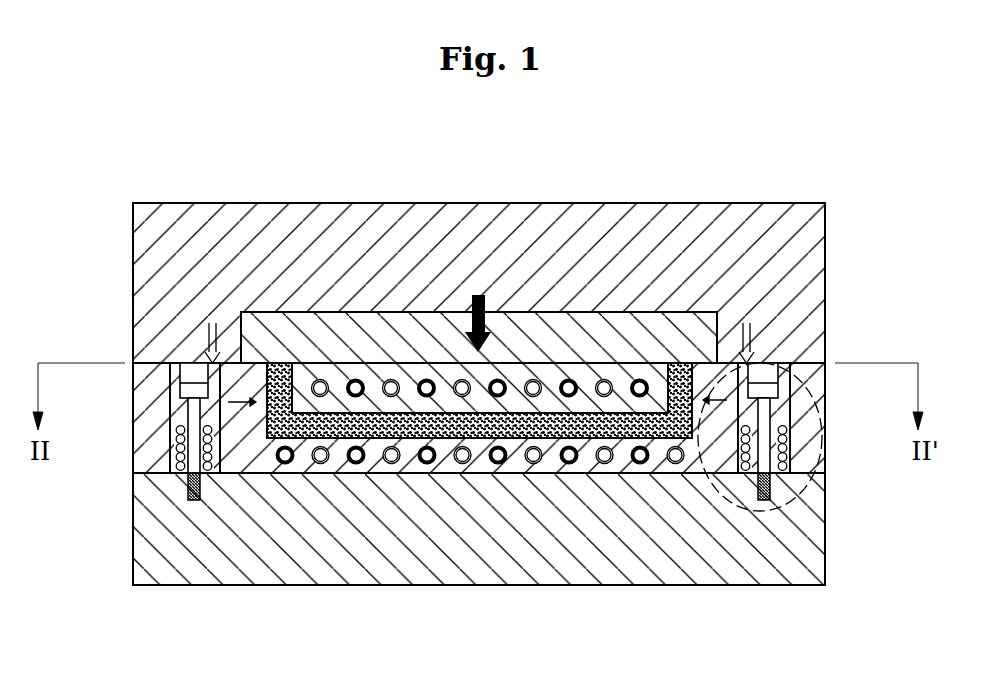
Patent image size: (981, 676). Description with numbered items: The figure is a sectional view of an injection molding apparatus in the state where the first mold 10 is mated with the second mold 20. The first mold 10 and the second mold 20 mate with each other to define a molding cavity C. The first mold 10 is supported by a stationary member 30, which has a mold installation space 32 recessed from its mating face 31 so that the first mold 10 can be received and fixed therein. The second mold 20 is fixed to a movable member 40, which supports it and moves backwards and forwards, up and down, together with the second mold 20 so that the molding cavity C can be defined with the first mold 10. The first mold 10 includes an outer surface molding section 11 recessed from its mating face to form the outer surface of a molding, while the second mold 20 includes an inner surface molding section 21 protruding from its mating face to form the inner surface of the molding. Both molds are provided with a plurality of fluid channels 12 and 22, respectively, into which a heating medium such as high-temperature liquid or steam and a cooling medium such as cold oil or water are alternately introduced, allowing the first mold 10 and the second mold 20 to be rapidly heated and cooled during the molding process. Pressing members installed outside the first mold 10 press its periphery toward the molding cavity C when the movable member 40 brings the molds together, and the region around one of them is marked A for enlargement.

The first mold 10 is at (258, 460).
The outer surface molding section 11 is at (408, 482).
The fluid channels 12 is at (568, 465).
The second mold 20 is at (432, 322).
The inner surface molding section 21 is at (391, 379).
The fluid channels 22 is at (569, 378).
The stationary member 30 is at (638, 572).
The mating face 31 is at (150, 360).
The mold installation space 32 is at (358, 464).
The movable member 40 is at (640, 218).
The molding cavity C is at (490, 432).
The enlarged region A is at (758, 328).